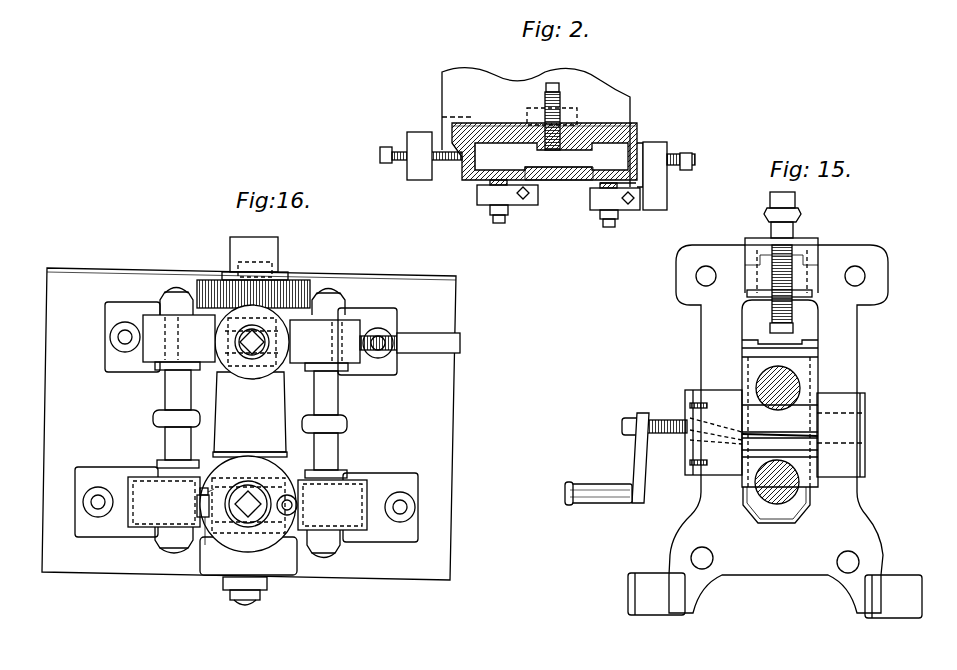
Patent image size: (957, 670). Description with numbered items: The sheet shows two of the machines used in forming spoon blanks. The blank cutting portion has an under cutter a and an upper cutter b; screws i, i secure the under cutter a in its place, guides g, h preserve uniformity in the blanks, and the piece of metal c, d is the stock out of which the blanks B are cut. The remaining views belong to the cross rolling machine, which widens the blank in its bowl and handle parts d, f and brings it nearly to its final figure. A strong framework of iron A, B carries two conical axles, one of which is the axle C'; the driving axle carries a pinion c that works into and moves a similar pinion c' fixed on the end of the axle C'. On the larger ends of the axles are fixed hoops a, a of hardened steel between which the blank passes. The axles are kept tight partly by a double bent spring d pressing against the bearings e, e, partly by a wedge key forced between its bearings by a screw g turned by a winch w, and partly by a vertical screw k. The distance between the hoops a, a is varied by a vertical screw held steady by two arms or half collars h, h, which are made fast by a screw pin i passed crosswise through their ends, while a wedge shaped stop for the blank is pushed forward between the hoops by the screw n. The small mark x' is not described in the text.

In FIG. 2, the framework B is at (544, 151).
In FIG. 15, the framework B is at (775, 431).
In FIG. 16, the framework B is at (325, 326).
In FIG. 16, the framework A is at (246, 423).
In FIG. 16, the conical axle C' is at (250, 414).
In FIG. 15, the pinion c' is at (778, 435).
In FIG. 16, the pinion c' is at (259, 272).
In FIG. 2, the under cutter a is at (559, 173).
In FIG. 16, the under cutter a is at (249, 436).
In FIG. 2, the upper cutter b is at (618, 182).
In FIG. 2, the piece of metal c is at (558, 208).
In FIG. 2, the piece of metal d is at (626, 145).
In FIG. 2, the bearings e is at (536, 127).
In FIG. 2, the handle part f is at (488, 156).
In FIG. 2, the guide h is at (544, 132).
In FIG. 16, the guide h is at (206, 516).
In FIG. 2, the screw i is at (534, 140).
In FIG. 16, the screw i is at (248, 504).
In FIG. 15, the vertical screw k is at (781, 262).
In FIG. 16, the vertical screw k is at (252, 342).
In FIG. 15, the guide g is at (743, 433).
In FIG. 15, the screw n is at (607, 459).
In FIG. 16, the winch w is at (399, 341).
In FIG. 16, the pin x' is at (214, 492).